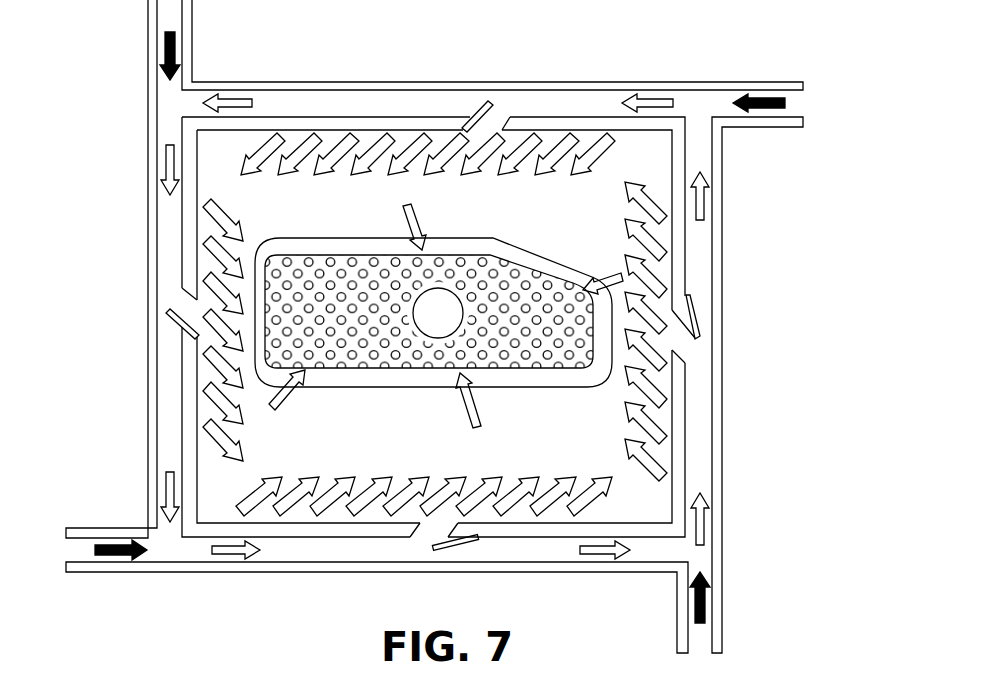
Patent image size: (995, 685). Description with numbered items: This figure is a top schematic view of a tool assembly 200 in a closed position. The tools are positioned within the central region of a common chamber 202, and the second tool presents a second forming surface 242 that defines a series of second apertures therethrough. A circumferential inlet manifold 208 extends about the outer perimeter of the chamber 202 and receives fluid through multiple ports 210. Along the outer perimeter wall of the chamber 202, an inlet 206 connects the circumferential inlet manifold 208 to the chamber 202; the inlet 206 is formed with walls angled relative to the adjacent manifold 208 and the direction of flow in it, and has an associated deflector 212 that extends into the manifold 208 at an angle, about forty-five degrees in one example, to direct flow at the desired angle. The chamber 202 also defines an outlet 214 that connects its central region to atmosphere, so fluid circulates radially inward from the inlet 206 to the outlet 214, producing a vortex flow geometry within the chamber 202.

The tool assembly 200 is at (449, 326).
The chamber 202 is at (439, 324).
The inlet 206 is at (502, 128).
The circumferential inlet manifold 208 is at (700, 277).
The port 210 is at (170, 20).
The deflector 212 is at (488, 105).
The outlet 214 is at (443, 320).
The second forming surface 242 is at (521, 331).